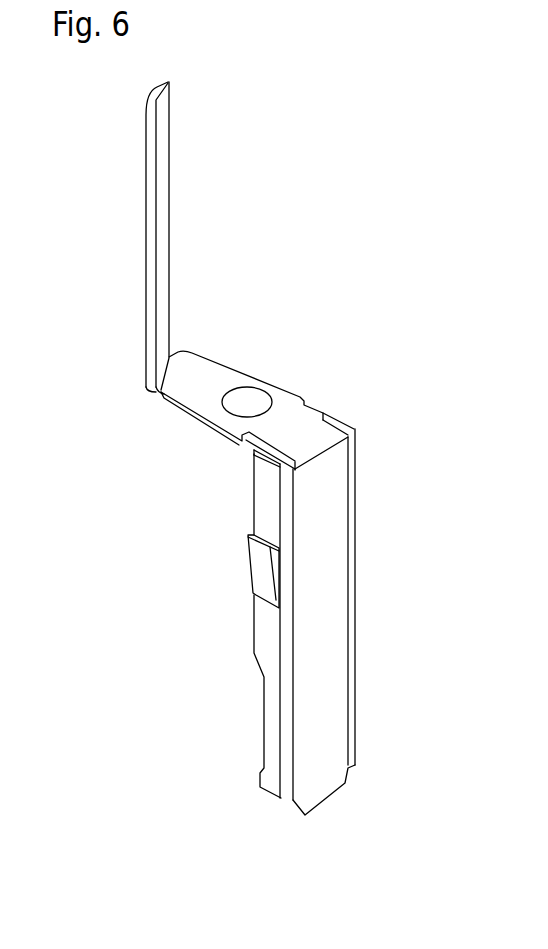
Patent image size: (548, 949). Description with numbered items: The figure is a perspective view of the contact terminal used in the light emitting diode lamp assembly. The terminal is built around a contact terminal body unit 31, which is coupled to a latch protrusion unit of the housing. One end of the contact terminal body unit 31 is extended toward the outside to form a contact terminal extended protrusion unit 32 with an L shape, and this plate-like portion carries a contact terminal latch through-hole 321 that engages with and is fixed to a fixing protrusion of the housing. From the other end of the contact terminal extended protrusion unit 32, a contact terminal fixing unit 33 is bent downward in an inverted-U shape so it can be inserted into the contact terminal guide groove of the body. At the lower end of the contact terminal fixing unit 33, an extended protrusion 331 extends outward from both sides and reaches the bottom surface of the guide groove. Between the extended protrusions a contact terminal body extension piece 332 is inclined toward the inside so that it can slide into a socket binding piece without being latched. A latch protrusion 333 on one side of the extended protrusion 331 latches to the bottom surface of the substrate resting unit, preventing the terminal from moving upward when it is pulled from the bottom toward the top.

The contact terminal body unit 31 is at (152, 248).
The contact terminal extended protrusion unit 32 is at (197, 387).
The contact terminal latch through-hole 321 is at (255, 398).
The contact terminal fixing unit 33 is at (316, 622).
The extended protrusion 331 is at (271, 643).
The contact terminal body extension piece 332 is at (337, 677).
The latch protrusion 333 is at (259, 567).